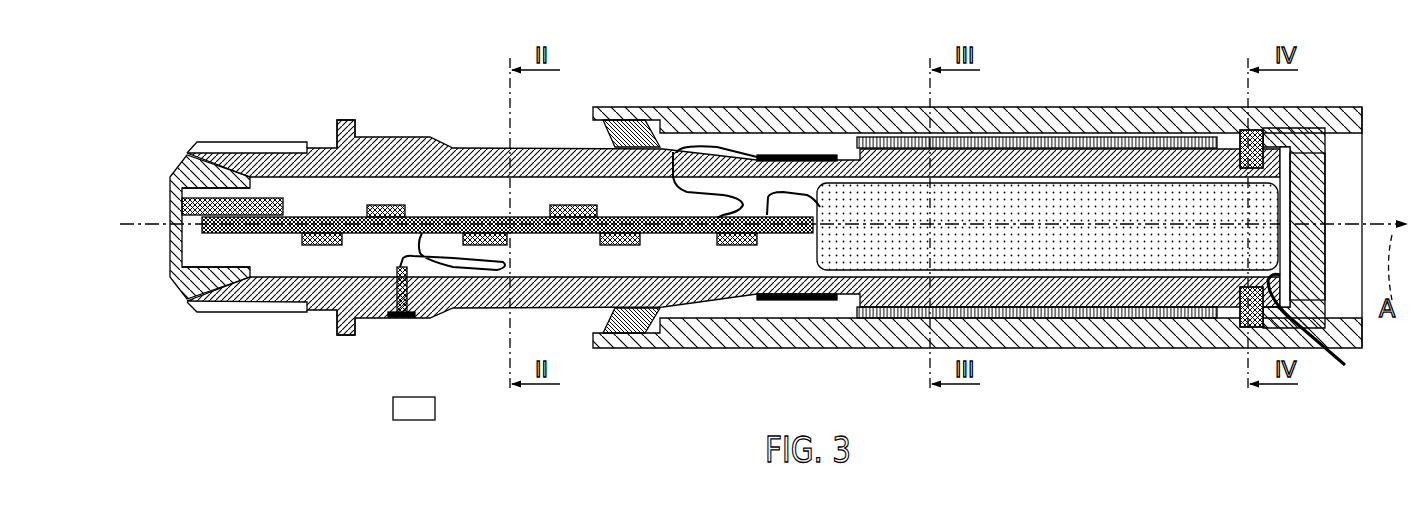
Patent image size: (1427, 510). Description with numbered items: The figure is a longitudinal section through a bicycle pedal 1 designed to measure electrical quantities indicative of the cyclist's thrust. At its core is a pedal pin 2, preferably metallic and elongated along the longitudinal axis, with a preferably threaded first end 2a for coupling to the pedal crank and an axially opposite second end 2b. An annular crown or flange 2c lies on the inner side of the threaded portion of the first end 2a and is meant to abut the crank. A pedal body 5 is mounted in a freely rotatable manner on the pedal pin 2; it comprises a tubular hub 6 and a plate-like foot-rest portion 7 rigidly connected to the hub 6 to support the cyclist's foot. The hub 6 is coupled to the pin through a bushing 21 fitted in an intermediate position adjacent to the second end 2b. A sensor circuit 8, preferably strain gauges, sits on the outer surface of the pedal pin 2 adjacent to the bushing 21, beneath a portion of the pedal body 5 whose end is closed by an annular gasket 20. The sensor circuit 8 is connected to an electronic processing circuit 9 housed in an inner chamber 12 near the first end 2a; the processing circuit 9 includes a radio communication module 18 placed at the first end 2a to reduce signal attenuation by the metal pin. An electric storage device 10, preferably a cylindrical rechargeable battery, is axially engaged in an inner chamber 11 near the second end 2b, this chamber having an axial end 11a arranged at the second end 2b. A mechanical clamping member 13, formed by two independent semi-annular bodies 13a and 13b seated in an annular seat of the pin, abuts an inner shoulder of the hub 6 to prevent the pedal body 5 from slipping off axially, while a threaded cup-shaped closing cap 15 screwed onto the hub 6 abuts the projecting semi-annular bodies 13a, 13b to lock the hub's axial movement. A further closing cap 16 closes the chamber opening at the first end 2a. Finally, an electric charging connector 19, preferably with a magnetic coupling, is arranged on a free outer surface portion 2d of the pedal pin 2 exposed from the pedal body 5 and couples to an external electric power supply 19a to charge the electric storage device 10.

The pedal 1 is at (266, 346).
The pedal pin 2 is at (592, 323).
The first end 2a is at (183, 140).
The second end 2b is at (1294, 160).
The annular crown or flange 2c is at (356, 122).
The free outer surface portion 2d is at (420, 317).
The pedal body 5 is at (860, 348).
The hub 6 is at (1040, 125).
The foot-rest portion 7 is at (853, 105).
The sensor circuit 8 is at (790, 152).
The electronic processing circuit 9 is at (456, 204).
The electric storage device 10 is at (1117, 268).
The inner chamber 11 is at (1030, 270).
The axial end 11a is at (1325, 331).
The inner chamber 12 is at (524, 182).
The mechanical clamping member 13 is at (1250, 227).
The semi-annular body 13a is at (1240, 128).
The semi-annular body 13b is at (1242, 330).
The closing cap 15 is at (1312, 188).
The closing cap 16 is at (172, 288).
The radio communication module 18 is at (262, 193).
The electric charging connector 19 is at (402, 324).
The external electric power supply 19a is at (435, 410).
The annular gasket 20 is at (653, 124).
The bushing 21 is at (1117, 138).